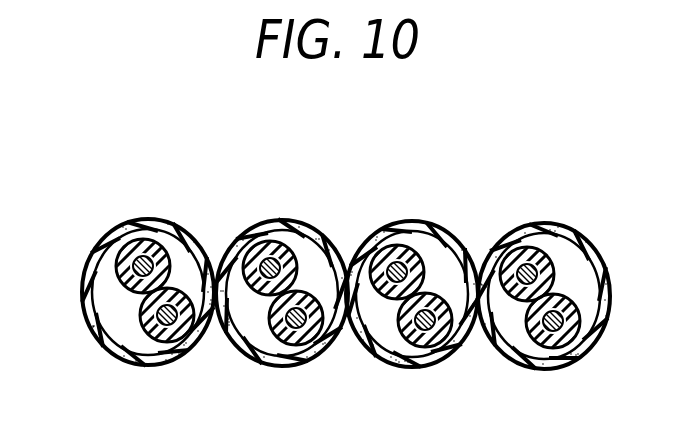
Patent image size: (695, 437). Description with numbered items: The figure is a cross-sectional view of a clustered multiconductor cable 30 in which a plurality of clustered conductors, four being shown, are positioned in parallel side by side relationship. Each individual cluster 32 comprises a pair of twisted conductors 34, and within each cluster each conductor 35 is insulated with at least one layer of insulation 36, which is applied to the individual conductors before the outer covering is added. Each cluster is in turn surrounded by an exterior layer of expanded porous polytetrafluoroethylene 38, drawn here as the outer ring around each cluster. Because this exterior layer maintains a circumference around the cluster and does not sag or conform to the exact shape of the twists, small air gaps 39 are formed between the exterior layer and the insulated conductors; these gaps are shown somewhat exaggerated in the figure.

The multiconductor cable 30 is at (327, 200).
The cluster 32 is at (108, 355).
The twisted conductors 34 is at (142, 294).
The conductor 35 is at (160, 340).
The layer of insulation 36 is at (175, 336).
The exterior layer of expanded porous polytetrafluoroethylene 38 is at (90, 273).
The air gaps 39 is at (177, 262).